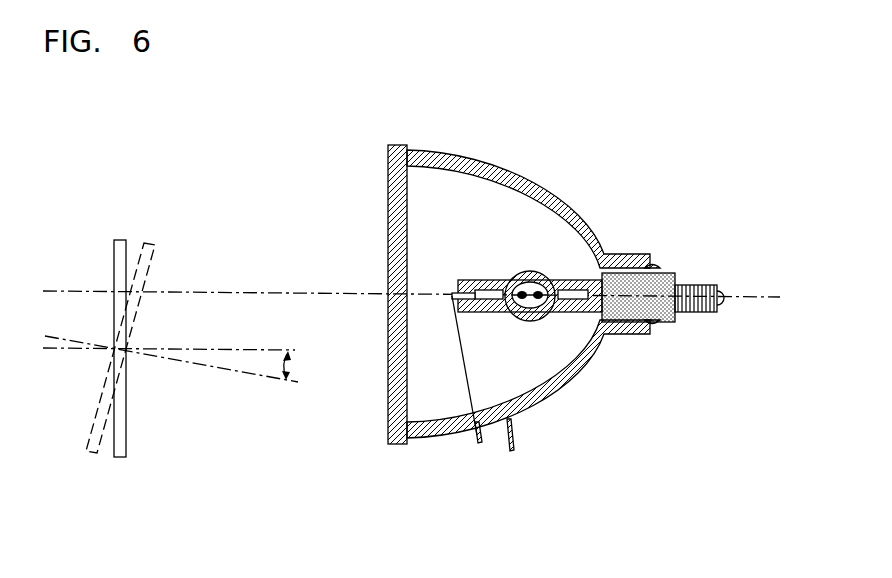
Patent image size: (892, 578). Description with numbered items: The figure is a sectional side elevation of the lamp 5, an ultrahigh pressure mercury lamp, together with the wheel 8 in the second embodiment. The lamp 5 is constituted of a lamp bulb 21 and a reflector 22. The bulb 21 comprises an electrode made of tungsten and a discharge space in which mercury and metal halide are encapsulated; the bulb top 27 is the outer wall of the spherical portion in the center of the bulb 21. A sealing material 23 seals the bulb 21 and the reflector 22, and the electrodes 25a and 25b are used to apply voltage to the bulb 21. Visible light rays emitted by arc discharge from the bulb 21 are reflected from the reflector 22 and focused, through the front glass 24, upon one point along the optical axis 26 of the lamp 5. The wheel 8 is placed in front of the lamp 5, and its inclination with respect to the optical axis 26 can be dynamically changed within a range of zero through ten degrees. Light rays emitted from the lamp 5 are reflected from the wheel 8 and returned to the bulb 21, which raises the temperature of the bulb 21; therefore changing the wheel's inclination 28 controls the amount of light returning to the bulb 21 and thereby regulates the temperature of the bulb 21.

The lamp 5 is at (343, 160).
The wheel 8 is at (122, 448).
The lamp bulb 21 is at (535, 200).
The reflector 22 is at (576, 380).
The sealing material 23 is at (652, 268).
The front glass 24 is at (389, 268).
The electrode 25a is at (513, 430).
The electrode 25b is at (720, 306).
The optical axis 26 is at (268, 291).
The bulb top 27 is at (532, 257).
The wheel's inclination 28 is at (296, 371).